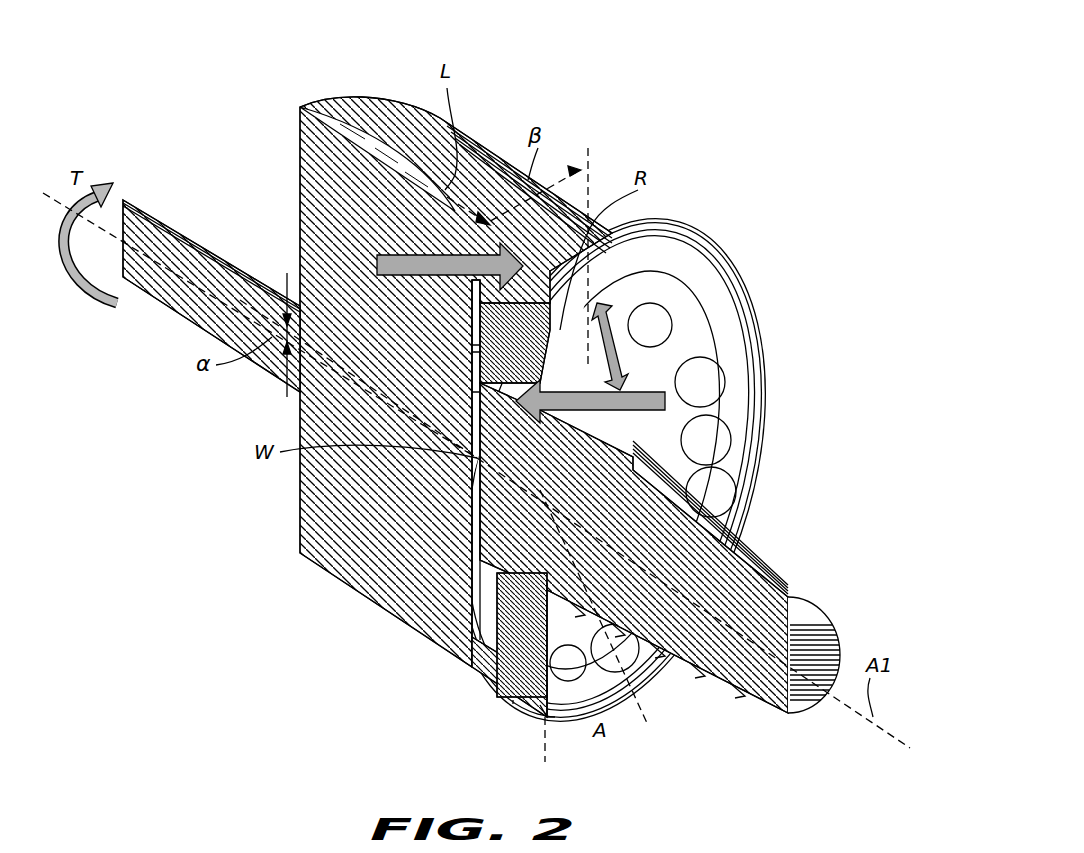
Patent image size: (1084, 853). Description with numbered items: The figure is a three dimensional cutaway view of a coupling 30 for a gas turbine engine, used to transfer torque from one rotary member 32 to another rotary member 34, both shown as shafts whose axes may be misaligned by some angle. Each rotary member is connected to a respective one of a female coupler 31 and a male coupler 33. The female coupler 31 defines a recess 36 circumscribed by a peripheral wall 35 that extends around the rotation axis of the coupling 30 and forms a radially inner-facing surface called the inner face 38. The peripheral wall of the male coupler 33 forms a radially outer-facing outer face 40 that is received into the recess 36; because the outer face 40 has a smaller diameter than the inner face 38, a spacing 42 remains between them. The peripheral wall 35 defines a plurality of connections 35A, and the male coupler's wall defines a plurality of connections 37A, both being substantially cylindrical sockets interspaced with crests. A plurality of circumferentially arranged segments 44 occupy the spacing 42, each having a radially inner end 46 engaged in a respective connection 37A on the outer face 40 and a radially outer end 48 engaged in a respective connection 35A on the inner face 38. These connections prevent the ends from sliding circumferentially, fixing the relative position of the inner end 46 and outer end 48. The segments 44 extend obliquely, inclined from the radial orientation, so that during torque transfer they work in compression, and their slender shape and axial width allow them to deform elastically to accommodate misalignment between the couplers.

The coupling 30 is at (622, 146).
The female coupler 31 is at (513, 710).
The rotary member 32 is at (203, 246).
The male coupler 33 is at (620, 686).
The rotary member 34 is at (793, 584).
The peripheral wall 35 is at (524, 700).
The connections 35A is at (705, 432).
The recess 36 is at (484, 620).
The connections 37A is at (690, 386).
The inner face 38 is at (565, 330).
The outer face 40 is at (612, 348).
The spacing 42 is at (413, 612).
The segments 44 is at (745, 418).
The radially inner end 46 is at (690, 380).
The radially outer end 48 is at (665, 385).